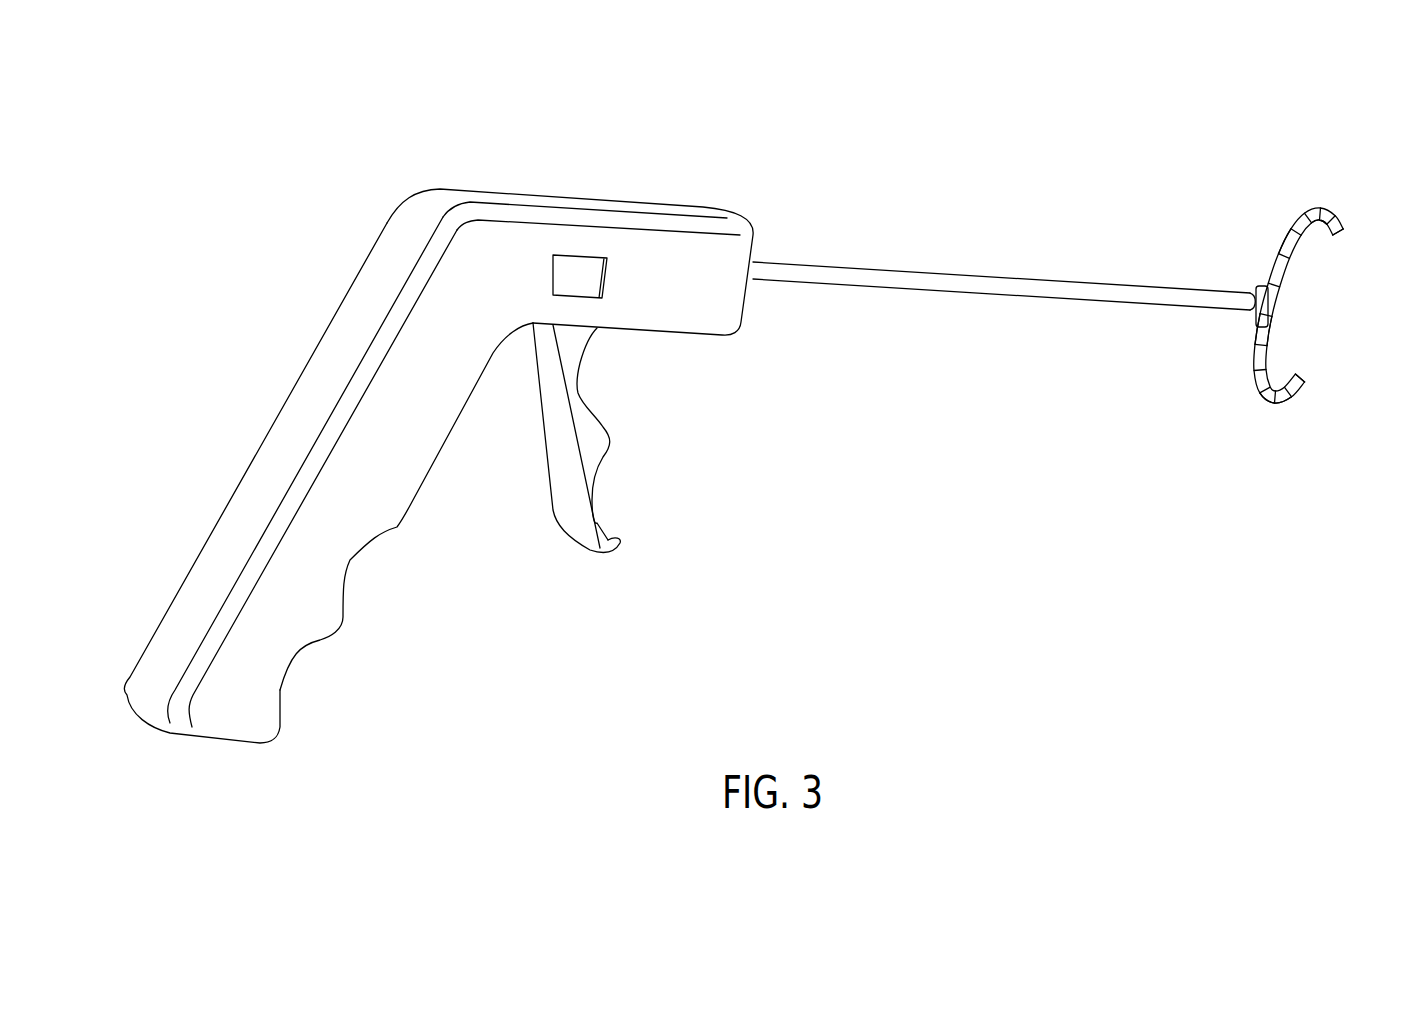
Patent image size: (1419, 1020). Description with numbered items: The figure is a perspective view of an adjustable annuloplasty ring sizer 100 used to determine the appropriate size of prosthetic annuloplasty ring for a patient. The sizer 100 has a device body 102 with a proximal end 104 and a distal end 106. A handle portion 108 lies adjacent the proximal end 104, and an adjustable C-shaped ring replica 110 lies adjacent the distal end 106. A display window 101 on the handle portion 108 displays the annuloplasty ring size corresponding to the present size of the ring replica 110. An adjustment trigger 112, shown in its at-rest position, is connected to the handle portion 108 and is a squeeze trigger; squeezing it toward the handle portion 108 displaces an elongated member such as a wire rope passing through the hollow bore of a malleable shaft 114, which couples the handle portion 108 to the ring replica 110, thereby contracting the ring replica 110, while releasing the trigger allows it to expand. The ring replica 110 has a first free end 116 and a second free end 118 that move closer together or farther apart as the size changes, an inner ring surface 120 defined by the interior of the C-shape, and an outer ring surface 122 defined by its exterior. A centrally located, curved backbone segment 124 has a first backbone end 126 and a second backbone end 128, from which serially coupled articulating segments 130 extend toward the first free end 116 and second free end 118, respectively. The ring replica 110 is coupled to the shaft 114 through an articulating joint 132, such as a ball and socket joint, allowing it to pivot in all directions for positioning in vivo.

The adjustable ring sizer 100 is at (765, 414).
The display window 101 is at (580, 275).
The device body 102 is at (734, 226).
The proximal end 104 is at (240, 478).
The distal end 106 is at (1252, 290).
The handle portion 108 is at (400, 490).
The adjustable ring replica 110 is at (1305, 313).
The adjustment trigger 112 is at (605, 542).
The shaft 114 is at (1020, 285).
The first free end 116 is at (1342, 236).
The second free end 118 is at (1307, 370).
The inner ring surface 120 is at (1263, 342).
The outer ring surface 122 is at (1287, 397).
The backbone segment 124 is at (1282, 287).
The first backbone end 126 is at (1285, 257).
The second backbone end 128 is at (1270, 347).
The articulating segments 130 is at (1322, 212).
The articulating joint 132 is at (1245, 310).